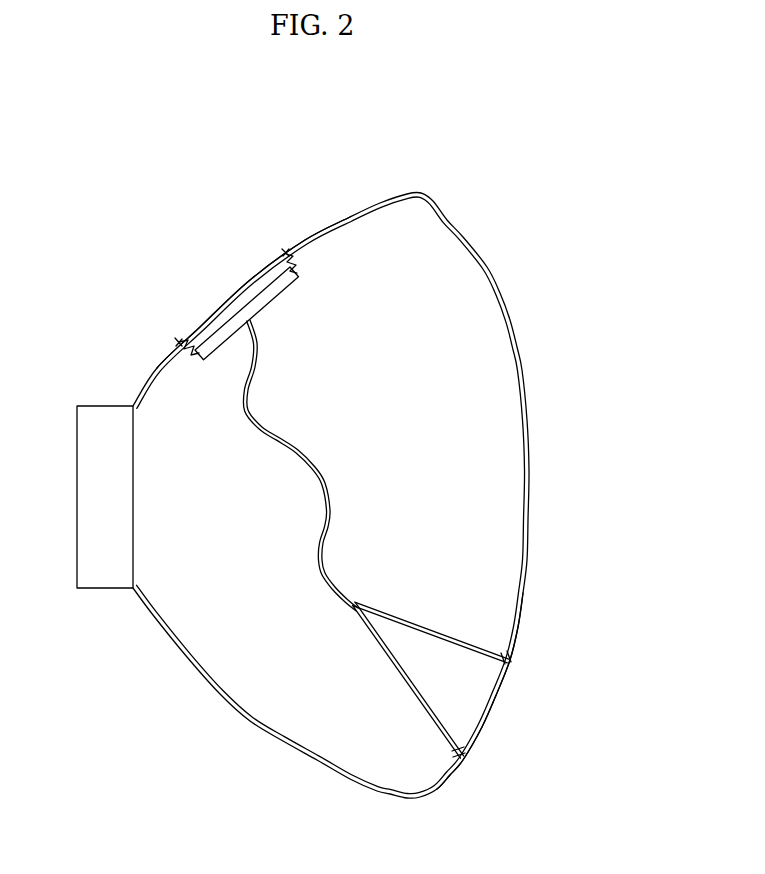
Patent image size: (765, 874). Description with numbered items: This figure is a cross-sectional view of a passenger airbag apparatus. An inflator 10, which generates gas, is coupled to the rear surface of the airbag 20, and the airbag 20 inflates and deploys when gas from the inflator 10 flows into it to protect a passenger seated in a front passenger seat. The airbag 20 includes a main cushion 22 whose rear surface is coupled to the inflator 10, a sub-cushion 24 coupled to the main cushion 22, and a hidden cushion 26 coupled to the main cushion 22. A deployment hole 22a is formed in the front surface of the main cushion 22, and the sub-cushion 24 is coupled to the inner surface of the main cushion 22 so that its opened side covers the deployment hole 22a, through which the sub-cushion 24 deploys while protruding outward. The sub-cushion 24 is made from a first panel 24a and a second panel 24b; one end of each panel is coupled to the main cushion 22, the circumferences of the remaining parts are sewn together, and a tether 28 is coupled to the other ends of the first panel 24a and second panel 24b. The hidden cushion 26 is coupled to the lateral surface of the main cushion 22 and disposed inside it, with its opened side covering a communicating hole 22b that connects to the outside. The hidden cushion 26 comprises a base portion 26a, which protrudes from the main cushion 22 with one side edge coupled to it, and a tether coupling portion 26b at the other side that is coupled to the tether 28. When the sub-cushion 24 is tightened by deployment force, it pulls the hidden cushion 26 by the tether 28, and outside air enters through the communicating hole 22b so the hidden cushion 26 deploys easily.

The inflator 10 is at (77, 406).
The airbag 20 is at (449, 192).
The main cushion 22 is at (488, 267).
The deployment hole 22a is at (495, 712).
The communicating hole 22b is at (223, 300).
The sub-cushion 24 is at (368, 830).
The first panel 24a is at (393, 655).
The second panel 24b is at (445, 642).
The hidden cushion 26 is at (282, 195).
The base portion 26a is at (286, 252).
The tether coupling portion 26b is at (270, 298).
The tether 28 is at (320, 468).